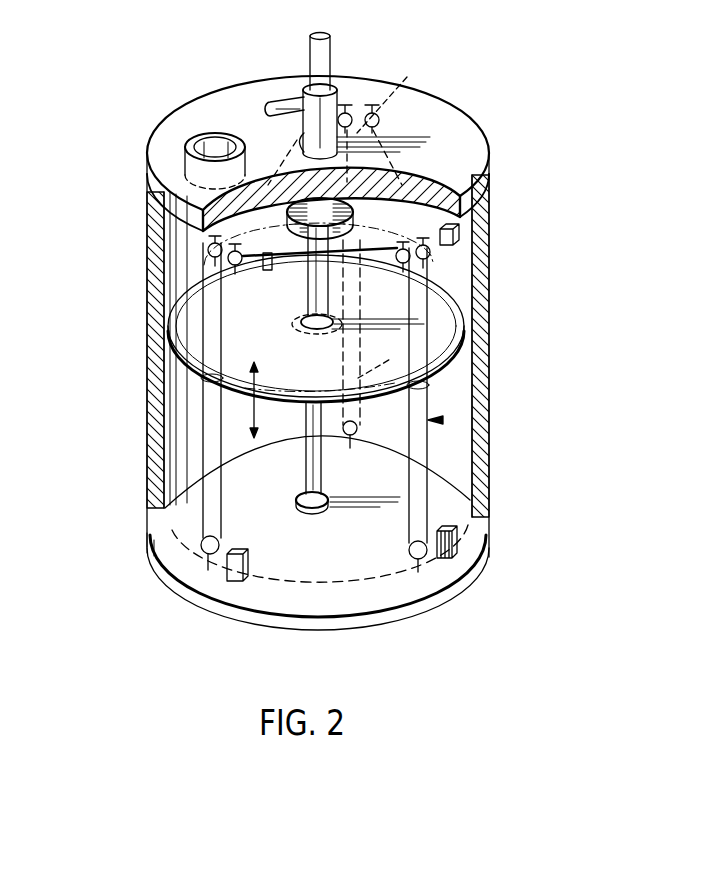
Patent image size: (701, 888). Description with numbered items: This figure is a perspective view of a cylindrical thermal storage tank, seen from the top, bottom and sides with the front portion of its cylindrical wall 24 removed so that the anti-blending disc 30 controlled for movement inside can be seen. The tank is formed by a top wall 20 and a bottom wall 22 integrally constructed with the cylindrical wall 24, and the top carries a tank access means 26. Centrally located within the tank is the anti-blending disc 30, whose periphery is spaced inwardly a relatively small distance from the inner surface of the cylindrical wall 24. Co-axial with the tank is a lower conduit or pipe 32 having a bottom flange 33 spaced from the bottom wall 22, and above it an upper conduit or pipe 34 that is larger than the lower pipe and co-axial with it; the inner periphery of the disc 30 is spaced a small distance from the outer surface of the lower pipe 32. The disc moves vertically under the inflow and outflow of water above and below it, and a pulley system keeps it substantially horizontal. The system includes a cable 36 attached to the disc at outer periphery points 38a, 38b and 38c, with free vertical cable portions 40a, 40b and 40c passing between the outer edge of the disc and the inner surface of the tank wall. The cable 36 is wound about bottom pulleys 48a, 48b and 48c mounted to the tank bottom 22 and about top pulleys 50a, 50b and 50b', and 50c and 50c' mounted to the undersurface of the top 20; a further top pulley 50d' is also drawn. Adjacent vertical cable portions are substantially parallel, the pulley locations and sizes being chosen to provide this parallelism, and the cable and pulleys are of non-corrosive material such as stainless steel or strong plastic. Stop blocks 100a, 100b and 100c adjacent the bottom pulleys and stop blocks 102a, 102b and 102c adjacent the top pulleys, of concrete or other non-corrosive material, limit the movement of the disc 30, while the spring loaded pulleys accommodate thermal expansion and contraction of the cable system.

The top wall 20 is at (468, 123).
The bottom wall 22 is at (447, 590).
The cylindrical wall 24 is at (492, 297).
The tank access means 26 is at (208, 142).
The anti-blending disc 30 is at (468, 333).
The lower conduit or pipe 32 is at (307, 307).
The bottom flange 33 is at (315, 509).
The upper conduit or pipe 34 is at (297, 128).
The cable 36 is at (442, 420).
The outer periphery point 38a is at (445, 385).
The outer periphery point 38b is at (360, 286).
The outer periphery point 38c is at (220, 392).
The free vertical cable portion 40a is at (440, 398).
The free vertical cable portion 40b is at (382, 357).
The free vertical cable portion 40c is at (228, 372).
The bottom pulley 48a is at (427, 558).
The bottom pulley 48b is at (365, 432).
The bottom pulley 48c is at (201, 550).
The top pulley 50a is at (432, 248).
The top pulley 50b is at (383, 81).
The top pulley 50b' is at (417, 90).
The top pulley 50c is at (161, 251).
The top pulley 50c' is at (157, 227).
The eyelet clip alternate position 50d' is at (503, 250).
The stop block 100a is at (456, 541).
The stop block 100b is at (349, 449).
The stop block 100c is at (225, 577).
The stop block 102a is at (447, 228).
The stop block 102b is at (261, 268).
The stop block 102c is at (297, 88).